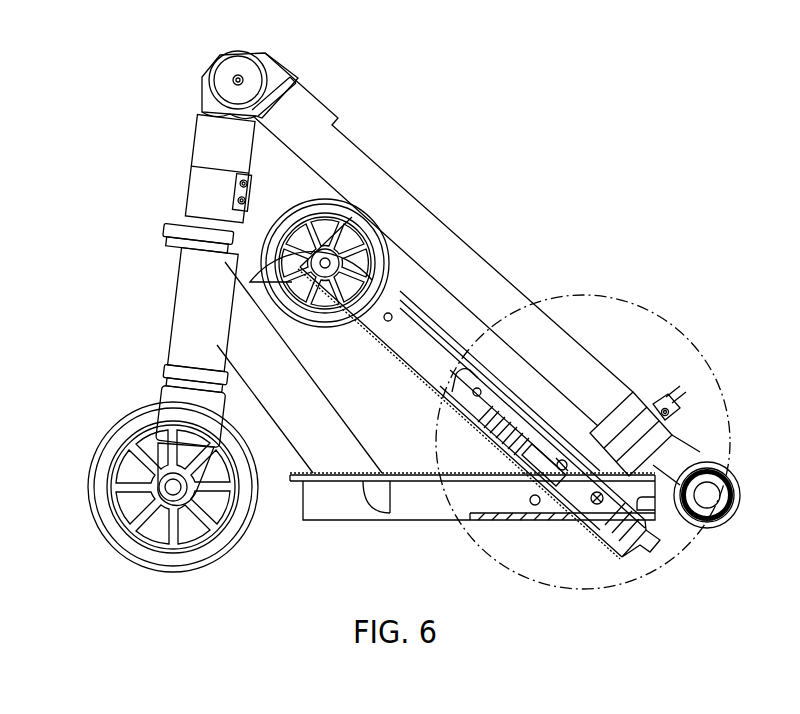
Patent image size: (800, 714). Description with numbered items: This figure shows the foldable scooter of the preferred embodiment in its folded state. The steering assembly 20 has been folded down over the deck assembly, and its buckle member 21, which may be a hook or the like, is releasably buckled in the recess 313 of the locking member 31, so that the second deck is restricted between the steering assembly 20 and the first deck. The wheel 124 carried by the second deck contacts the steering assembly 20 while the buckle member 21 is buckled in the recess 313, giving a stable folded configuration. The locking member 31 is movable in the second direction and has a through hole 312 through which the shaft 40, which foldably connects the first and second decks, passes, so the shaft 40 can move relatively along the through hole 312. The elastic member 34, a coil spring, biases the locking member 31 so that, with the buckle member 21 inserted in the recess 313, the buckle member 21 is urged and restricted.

The steering assembly 20 is at (481, 228).
The wheel 124 is at (334, 205).
The elastic member 34 is at (507, 390).
The through hole 312 is at (655, 478).
The buckle member 21 is at (567, 500).
The recess 313 is at (593, 500).
The shaft 40 is at (597, 504).
The locking member 31 is at (637, 548).